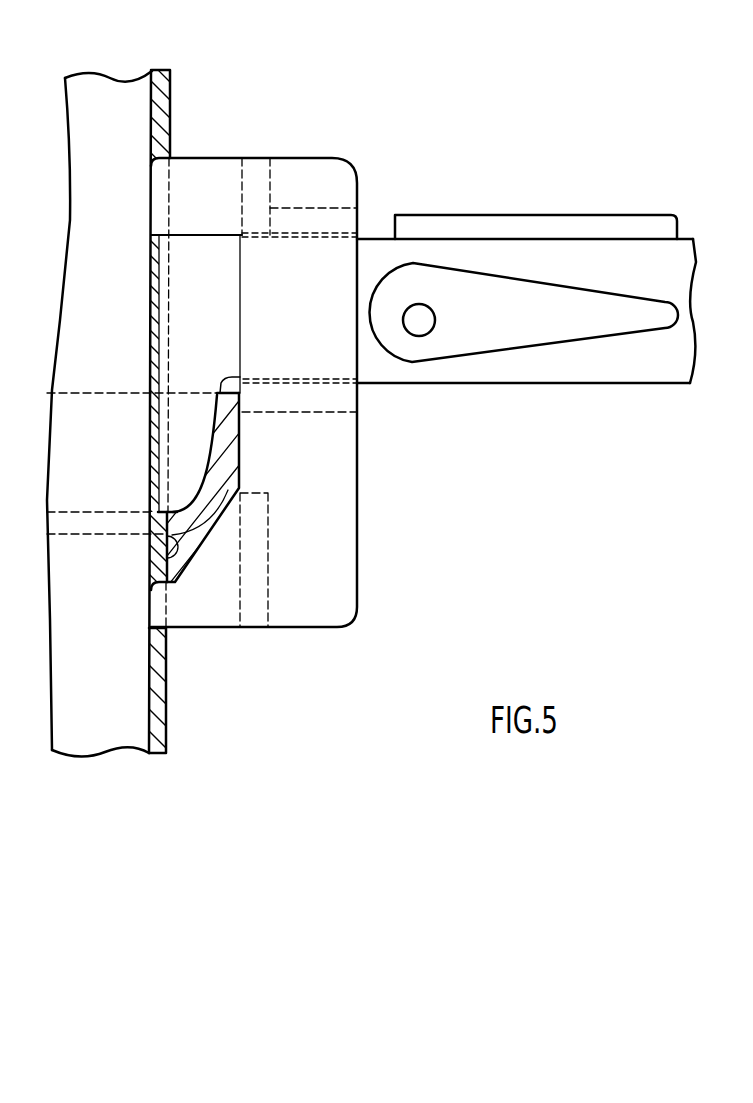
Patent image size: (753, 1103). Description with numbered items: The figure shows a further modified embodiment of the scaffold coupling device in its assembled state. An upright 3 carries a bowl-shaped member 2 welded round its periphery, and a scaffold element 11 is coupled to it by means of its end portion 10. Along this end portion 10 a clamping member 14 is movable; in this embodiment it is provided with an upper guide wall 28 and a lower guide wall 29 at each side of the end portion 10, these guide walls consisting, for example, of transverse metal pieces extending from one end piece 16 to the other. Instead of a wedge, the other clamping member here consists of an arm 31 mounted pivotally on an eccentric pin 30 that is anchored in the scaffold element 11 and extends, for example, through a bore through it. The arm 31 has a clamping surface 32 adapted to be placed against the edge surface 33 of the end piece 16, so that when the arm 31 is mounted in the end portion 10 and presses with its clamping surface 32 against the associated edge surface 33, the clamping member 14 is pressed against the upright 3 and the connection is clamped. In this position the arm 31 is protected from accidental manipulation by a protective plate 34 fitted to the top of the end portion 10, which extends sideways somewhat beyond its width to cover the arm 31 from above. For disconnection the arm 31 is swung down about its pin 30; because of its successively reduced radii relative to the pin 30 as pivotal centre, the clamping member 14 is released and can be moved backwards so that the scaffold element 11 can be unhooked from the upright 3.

The bowl-shaped member 2 is at (223, 430).
The upright 3 is at (196, 105).
The end portion 10 is at (378, 252).
The scaffold element 11 is at (542, 210).
The clamping member 14 is at (362, 578).
The end piece 16 is at (357, 492).
The upper guide wall 28 is at (361, 220).
The lower guide wall 29 is at (357, 400).
The eccentric pin 30 is at (422, 320).
The arm 31 is at (558, 317).
The clamping surface 32 is at (374, 270).
The edge surface 33 is at (357, 360).
The protective plate 34 is at (642, 232).